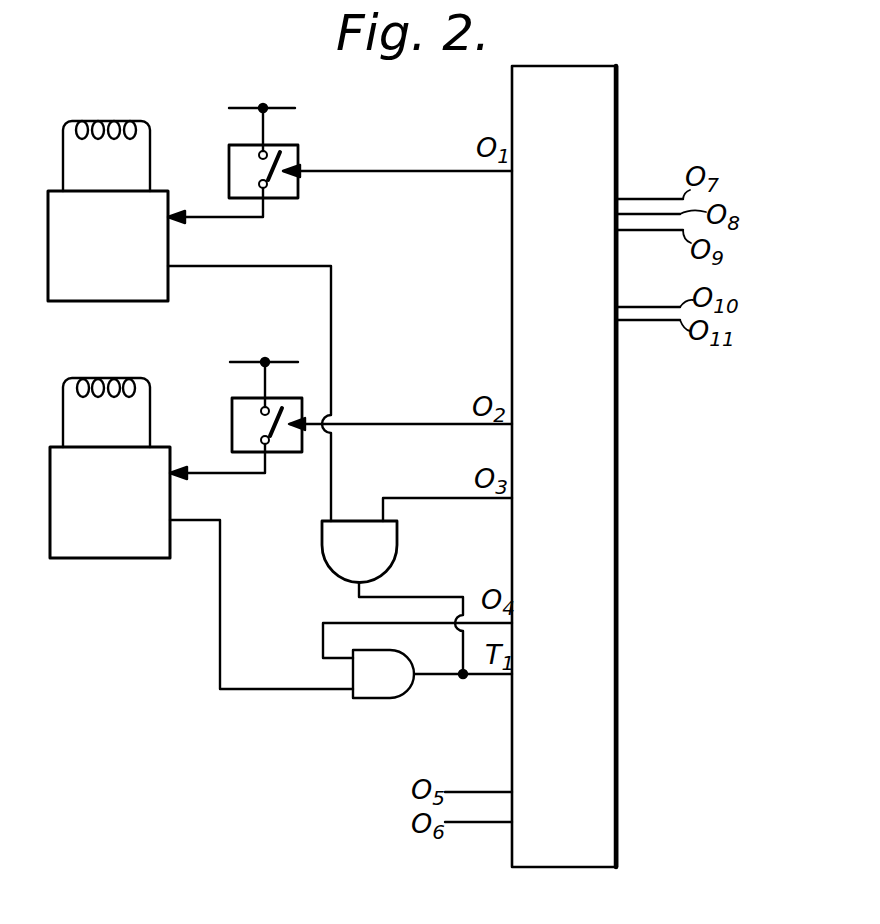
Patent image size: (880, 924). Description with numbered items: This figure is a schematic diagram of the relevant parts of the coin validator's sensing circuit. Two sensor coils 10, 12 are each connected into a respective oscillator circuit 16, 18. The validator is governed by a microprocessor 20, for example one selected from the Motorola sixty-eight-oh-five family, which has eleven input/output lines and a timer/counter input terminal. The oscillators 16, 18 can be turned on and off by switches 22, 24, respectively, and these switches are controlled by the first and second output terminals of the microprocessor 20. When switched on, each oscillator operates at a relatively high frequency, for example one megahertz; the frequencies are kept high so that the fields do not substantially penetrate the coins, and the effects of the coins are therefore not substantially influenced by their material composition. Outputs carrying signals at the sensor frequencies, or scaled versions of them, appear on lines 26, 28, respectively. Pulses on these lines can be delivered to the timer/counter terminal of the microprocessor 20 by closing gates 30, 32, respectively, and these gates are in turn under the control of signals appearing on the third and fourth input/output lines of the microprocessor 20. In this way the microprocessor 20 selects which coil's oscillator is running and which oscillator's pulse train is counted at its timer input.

The coil 10 is at (111, 121).
The coil 12 is at (131, 379).
The oscillator circuit 16 is at (125, 254).
The oscillator circuit 18 is at (127, 510).
The microprocessor 20 is at (584, 484).
The switch 22 is at (298, 146).
The switch 24 is at (232, 400).
The line 26 is at (270, 266).
The line 28 is at (211, 519).
The gate 30 is at (397, 545).
The gate 32 is at (391, 699).